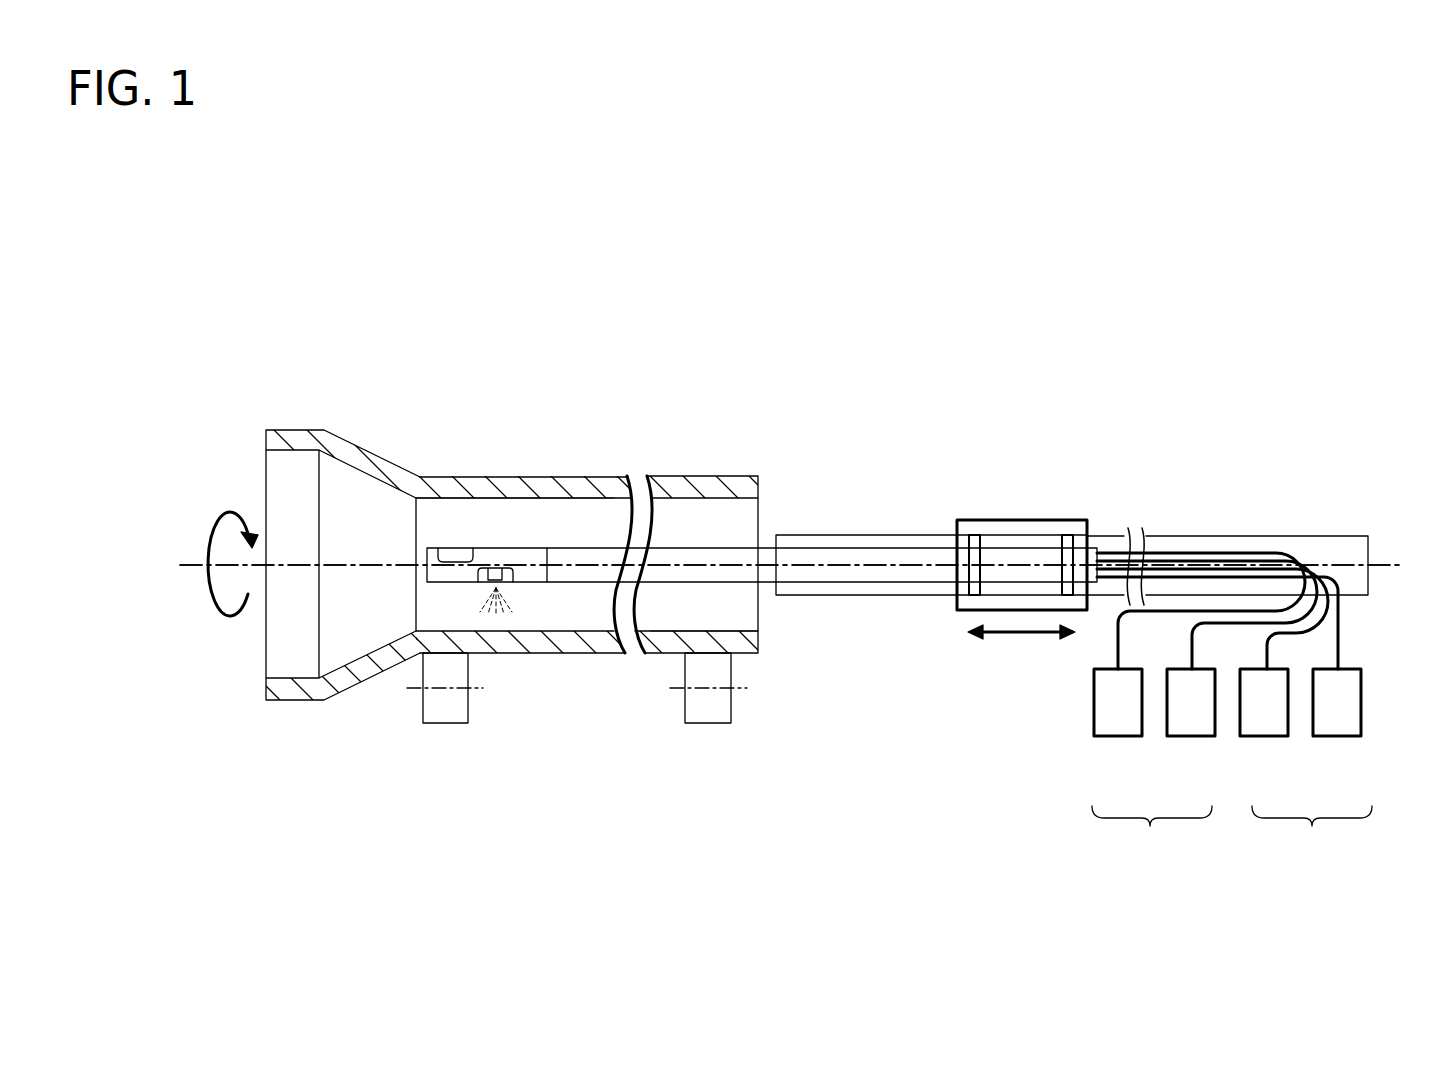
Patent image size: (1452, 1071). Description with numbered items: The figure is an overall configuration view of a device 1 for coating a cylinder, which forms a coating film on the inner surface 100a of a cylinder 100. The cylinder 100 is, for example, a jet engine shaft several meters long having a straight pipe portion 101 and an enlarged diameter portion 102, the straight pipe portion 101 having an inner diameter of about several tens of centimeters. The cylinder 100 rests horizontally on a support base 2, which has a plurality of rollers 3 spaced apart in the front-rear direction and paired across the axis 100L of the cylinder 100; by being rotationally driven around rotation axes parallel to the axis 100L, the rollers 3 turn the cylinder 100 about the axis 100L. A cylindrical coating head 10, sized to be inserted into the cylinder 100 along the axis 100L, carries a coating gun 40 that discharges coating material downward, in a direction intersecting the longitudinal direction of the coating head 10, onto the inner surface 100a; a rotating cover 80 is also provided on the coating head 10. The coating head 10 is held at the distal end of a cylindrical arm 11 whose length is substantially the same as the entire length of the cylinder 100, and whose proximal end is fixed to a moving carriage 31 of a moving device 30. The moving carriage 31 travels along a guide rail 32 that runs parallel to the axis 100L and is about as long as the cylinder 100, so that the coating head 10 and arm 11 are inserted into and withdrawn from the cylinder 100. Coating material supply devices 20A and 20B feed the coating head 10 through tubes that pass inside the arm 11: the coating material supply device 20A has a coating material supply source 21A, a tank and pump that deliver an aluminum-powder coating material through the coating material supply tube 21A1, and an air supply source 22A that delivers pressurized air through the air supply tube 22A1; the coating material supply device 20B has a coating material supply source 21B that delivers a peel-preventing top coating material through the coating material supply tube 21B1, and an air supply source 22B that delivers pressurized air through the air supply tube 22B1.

The device for coating a cylinder 1 is at (1190, 462).
The support base 2 is at (405, 730).
The rollers 3 is at (706, 722).
The coating head 10 is at (488, 536).
The arm 11 is at (797, 535).
The coating material supply device 20A is at (1152, 835).
The coating material supply device 20B is at (1312, 835).
The coating material supply source 21A is at (1118, 736).
The coating material supply tube 21A1 is at (1116, 645).
The coating material supply source 21B is at (1264, 736).
The coating material supply tube 21B1 is at (1268, 641).
The air supply source 22A is at (1191, 736).
The air supply tube 22A1 is at (1200, 624).
The air supply source 22B is at (1337, 736).
The air supply tube 22B1 is at (1340, 647).
The moving device 30 is at (1010, 508).
The moving carriage 31 is at (1048, 520).
The guide rail 32 is at (892, 535).
The coating gun 40 is at (482, 574).
The rotating cover 80 is at (525, 548).
The cylinder 100 is at (462, 477).
The axis 100L is at (190, 563).
The inner surface 100a is at (507, 632).
The straight pipe portion 101 is at (543, 462).
The enlarged diameter portion 102 is at (358, 430).